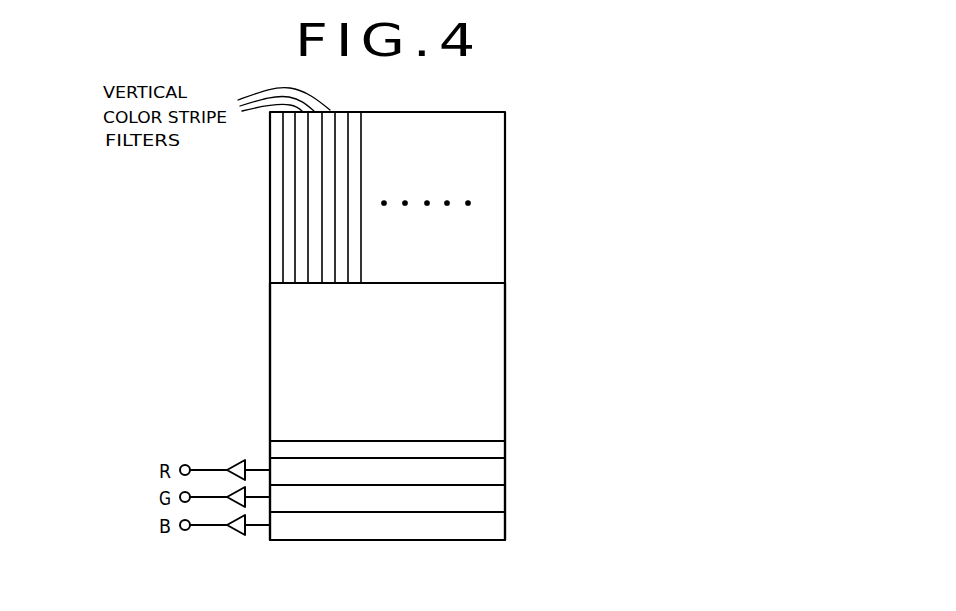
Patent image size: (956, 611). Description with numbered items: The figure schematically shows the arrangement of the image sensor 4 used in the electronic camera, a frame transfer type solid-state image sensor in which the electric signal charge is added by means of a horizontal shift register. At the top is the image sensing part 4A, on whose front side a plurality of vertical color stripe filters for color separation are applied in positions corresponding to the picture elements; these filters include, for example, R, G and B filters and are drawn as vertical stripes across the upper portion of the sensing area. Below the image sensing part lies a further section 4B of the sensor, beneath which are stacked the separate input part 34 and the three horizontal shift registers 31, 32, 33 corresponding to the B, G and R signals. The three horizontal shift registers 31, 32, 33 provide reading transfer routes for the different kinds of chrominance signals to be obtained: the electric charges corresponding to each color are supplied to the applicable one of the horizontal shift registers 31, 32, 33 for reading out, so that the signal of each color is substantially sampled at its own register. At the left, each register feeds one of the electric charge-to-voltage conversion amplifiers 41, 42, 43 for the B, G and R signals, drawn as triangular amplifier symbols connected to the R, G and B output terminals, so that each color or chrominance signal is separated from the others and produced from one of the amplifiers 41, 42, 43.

The image sensor 4 is at (250, 220).
The image sensing part 4A is at (505, 140).
The light-receiving / image section 4B is at (505, 312).
The horizontal shift register 31 is at (505, 527).
The horizontal shift register 32 is at (505, 500).
The horizontal shift register 33 is at (505, 472).
The separate input part 34 is at (505, 448).
The electric charge-to-voltage conversion amplifier 41 is at (236, 534).
The electric charge-to-voltage conversion amplifier 42 is at (234, 488).
The electric charge-to-voltage conversion amplifier 43 is at (235, 461).